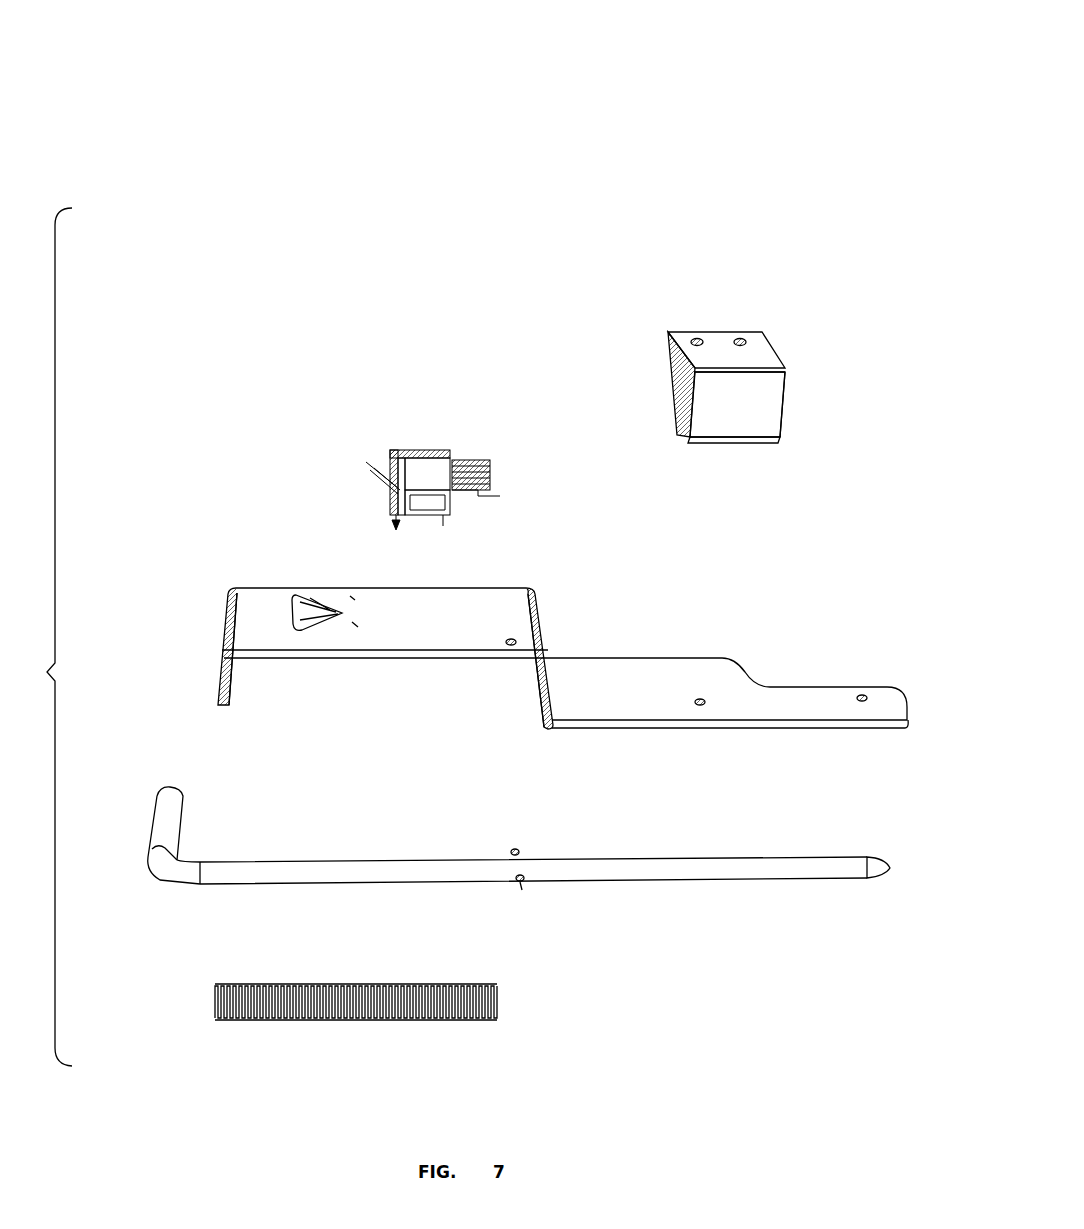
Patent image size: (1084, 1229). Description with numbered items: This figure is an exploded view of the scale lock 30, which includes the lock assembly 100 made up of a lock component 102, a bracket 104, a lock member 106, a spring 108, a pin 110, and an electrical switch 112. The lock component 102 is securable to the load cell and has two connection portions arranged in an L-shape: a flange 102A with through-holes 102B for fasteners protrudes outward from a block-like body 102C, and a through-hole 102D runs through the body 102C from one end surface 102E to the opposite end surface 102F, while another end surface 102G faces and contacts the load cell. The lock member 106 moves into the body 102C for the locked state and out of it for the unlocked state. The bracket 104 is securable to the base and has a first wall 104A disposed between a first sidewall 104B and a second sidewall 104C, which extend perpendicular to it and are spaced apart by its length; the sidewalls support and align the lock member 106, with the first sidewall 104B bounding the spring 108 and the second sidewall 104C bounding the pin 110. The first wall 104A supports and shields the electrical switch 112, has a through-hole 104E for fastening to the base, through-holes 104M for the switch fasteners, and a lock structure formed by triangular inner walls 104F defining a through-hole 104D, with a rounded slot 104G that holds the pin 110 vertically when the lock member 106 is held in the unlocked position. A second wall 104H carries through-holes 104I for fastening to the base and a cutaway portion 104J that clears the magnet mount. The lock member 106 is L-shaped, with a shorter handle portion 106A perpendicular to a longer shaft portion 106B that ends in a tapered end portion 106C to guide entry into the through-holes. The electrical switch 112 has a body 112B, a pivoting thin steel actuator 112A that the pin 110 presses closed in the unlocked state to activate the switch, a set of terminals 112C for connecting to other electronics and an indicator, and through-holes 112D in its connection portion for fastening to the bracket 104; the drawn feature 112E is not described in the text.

The scale lock 30 is at (690, 86).
The lock assembly 100 is at (38, 637).
The lock component 102 is at (734, 353).
The flange 102A is at (760, 352).
The through-holes 102B is at (697, 336).
The body 102C is at (812, 375).
The through-hole 102D is at (680, 418).
The end surface 102E is at (700, 400).
The opposite end surface 102F is at (782, 405).
The end surface 102G is at (682, 382).
The bracket 104 is at (507, 630).
The first wall 104A is at (440, 598).
The first sidewall 104B is at (232, 690).
The second sidewall 104C is at (545, 685).
The through-hole 104D is at (305, 600).
The through-hole 104E is at (515, 640).
The inner walls 104F is at (326, 600).
The slot 104G is at (338, 607).
The second wall 104H is at (628, 678).
The through-holes 104I is at (702, 704).
The cutaway portion 104J is at (803, 658).
The through-holes 104M is at (358, 627).
The lock member 106 is at (480, 866).
The handle portion 106A is at (168, 811).
The shaft portion 106B is at (350, 877).
The tapered end portion 106C is at (882, 872).
The spring 108 is at (172, 1007).
The pin 110 is at (518, 850).
The electrical switch 112 is at (425, 431).
The actuator 112A is at (382, 486).
The body 112B is at (433, 470).
The terminals 112C is at (492, 494).
The through-holes 112D is at (398, 450).
The switch actuator 112E is at (393, 478).